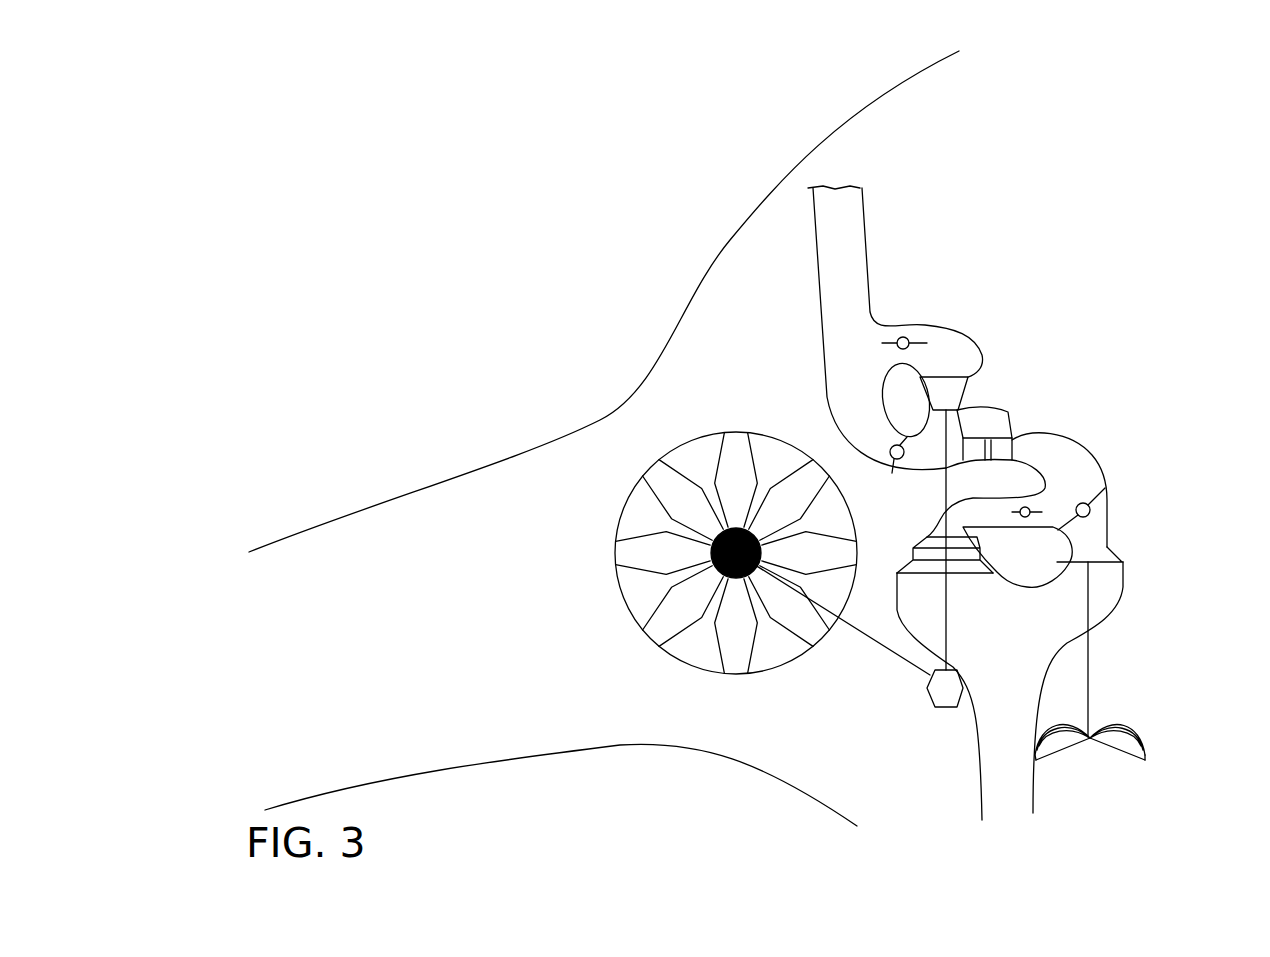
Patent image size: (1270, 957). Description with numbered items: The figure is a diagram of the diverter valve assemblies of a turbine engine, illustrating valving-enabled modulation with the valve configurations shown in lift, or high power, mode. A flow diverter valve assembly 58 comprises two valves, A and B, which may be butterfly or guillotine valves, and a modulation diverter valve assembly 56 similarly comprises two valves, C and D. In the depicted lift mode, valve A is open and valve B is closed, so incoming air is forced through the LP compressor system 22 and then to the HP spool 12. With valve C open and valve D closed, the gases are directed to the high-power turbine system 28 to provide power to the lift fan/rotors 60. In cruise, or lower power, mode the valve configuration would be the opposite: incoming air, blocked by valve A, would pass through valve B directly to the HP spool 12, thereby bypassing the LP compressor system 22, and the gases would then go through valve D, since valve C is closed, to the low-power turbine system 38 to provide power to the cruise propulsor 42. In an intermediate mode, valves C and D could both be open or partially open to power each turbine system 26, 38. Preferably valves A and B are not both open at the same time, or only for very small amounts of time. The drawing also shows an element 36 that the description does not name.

The HP spool 12 is at (992, 437).
The LP compressor system 22 is at (966, 386).
The turbine system 26 is at (927, 540).
The high-power turbine system 28 is at (987, 598).
The inlet conduit 36 is at (860, 230).
The low-power turbine system 38 is at (1140, 558).
The cruise propulsor 42 is at (1150, 742).
The modulation diverter valve assembly 56 is at (1082, 476).
The flow diverter valve assembly 58 is at (855, 364).
The lift fan/rotors 60 is at (612, 551).